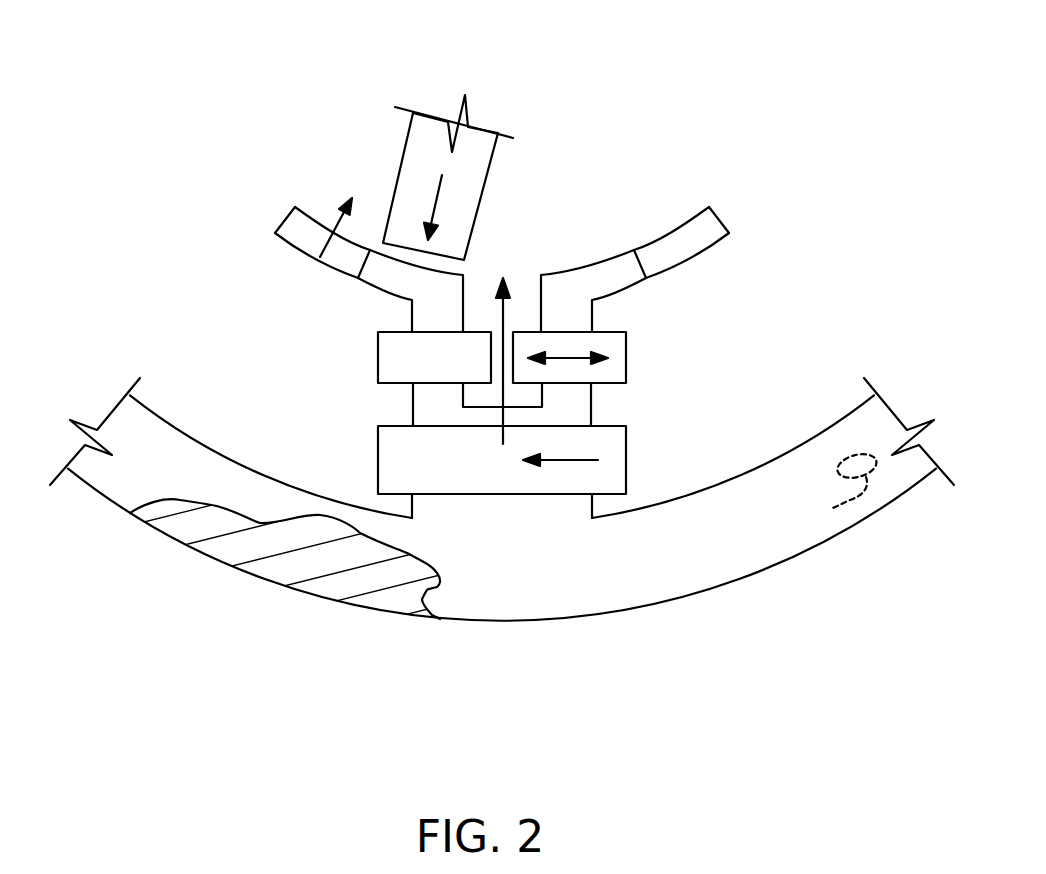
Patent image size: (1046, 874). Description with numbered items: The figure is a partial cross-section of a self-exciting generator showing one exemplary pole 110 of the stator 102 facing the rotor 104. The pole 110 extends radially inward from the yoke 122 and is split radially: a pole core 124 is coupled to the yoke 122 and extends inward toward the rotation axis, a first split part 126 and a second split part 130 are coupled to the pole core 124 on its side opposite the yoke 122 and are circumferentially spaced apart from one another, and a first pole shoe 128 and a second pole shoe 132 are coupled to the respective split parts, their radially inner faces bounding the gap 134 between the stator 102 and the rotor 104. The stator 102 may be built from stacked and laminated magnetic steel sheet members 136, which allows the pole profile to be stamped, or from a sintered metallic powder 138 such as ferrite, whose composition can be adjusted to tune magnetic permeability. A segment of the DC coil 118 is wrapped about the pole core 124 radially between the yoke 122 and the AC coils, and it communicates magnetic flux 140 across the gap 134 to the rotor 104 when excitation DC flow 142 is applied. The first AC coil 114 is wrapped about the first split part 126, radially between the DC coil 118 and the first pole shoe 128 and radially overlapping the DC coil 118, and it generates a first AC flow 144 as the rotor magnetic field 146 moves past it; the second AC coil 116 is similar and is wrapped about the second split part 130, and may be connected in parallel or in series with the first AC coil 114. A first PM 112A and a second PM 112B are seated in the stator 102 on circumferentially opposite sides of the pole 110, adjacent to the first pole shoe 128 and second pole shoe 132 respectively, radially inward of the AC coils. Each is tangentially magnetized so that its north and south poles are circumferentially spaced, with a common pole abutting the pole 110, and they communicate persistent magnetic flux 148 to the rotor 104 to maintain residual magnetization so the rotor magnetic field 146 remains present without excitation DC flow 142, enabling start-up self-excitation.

The stator 102 is at (93, 524).
The rotor 104 is at (430, 143).
The pole 110 is at (540, 646).
The first PM 112A is at (278, 222).
The second PM 112B is at (722, 220).
The first AC coil 114 is at (397, 355).
The second AC coil 116 is at (610, 343).
The DC coil 118 is at (475, 480).
The yoke 122 is at (732, 553).
The pole core 124 is at (572, 505).
The first split part 126 is at (438, 388).
The first pole shoe 128 is at (442, 300).
The second split part 130 is at (568, 388).
The second pole shoe 132 is at (605, 272).
The gap 134 is at (400, 253).
The sheet members 136 is at (200, 470).
The sintered metallic powder 138 is at (867, 512).
The magnetic flux 140 is at (500, 390).
The excitation DC flow 142 is at (563, 465).
The first AC flow 144 is at (563, 357).
The rotor magnetic field 146 is at (438, 202).
The persistent magnetic flux 148 is at (295, 206).